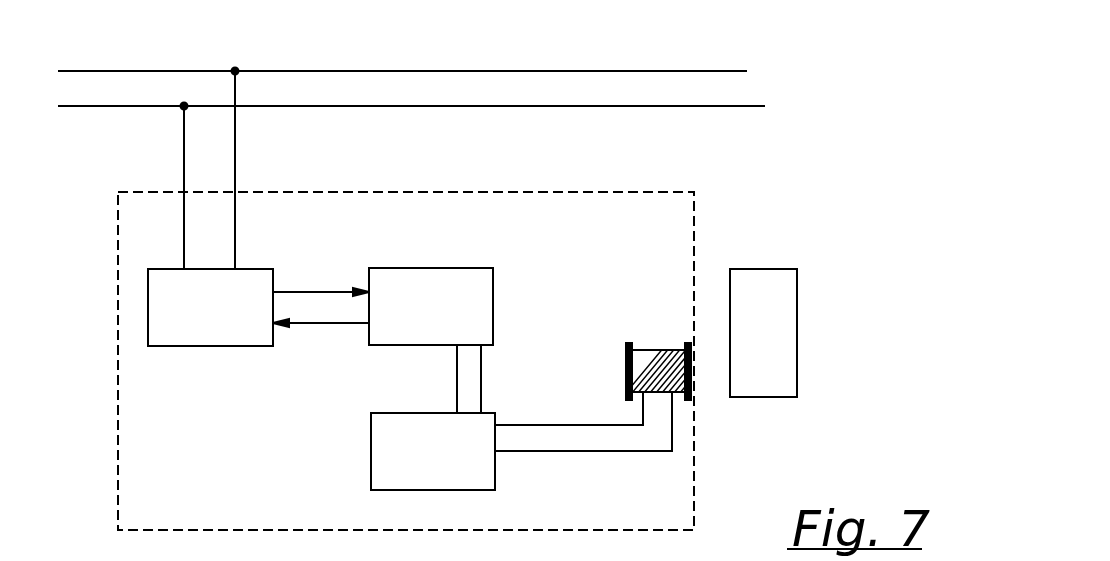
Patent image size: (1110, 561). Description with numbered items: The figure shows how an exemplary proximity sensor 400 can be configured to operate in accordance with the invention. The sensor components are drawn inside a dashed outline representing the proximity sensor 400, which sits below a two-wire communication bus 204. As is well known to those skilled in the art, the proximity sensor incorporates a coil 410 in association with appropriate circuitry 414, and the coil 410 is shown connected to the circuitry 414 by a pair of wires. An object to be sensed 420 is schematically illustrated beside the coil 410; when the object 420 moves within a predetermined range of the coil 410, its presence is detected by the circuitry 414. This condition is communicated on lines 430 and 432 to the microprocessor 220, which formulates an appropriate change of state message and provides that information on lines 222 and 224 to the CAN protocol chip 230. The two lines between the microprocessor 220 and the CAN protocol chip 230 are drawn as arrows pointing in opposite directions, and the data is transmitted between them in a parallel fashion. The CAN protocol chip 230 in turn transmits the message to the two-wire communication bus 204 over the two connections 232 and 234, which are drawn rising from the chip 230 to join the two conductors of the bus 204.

The two-wire communication bus 204 is at (745, 88).
The connection line 232 is at (235, 152).
The connection line 234 is at (184, 152).
The proximity sensor 400 is at (295, 530).
The CAN protocol chip 230 is at (200, 346).
The microprocessor 220 is at (493, 312).
The line 224 is at (320, 290).
The line 222 is at (328, 325).
The line 432 is at (457, 383).
The line 430 is at (481, 375).
The circuitry 414 is at (495, 485).
The coil 410 is at (652, 343).
The object to be sensed 420 is at (797, 337).